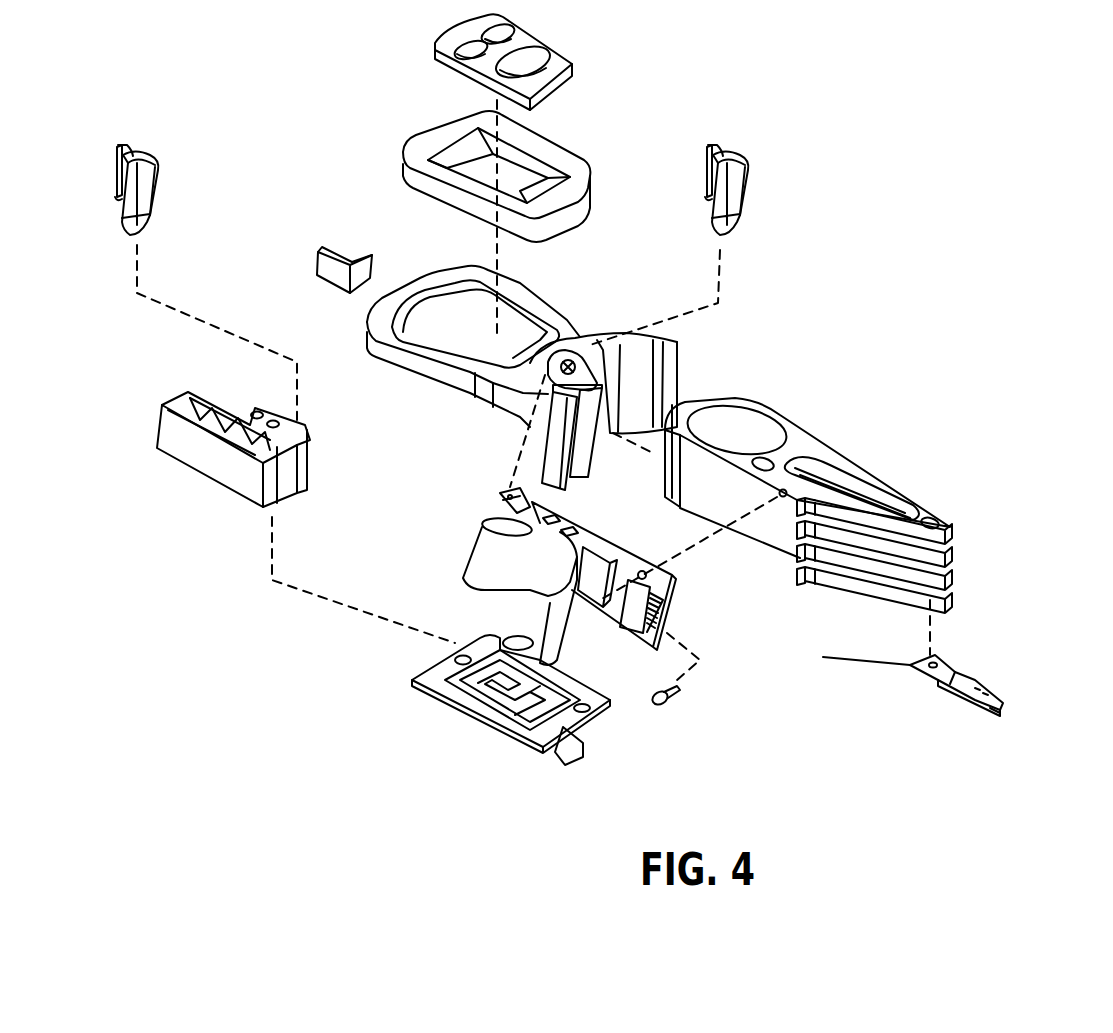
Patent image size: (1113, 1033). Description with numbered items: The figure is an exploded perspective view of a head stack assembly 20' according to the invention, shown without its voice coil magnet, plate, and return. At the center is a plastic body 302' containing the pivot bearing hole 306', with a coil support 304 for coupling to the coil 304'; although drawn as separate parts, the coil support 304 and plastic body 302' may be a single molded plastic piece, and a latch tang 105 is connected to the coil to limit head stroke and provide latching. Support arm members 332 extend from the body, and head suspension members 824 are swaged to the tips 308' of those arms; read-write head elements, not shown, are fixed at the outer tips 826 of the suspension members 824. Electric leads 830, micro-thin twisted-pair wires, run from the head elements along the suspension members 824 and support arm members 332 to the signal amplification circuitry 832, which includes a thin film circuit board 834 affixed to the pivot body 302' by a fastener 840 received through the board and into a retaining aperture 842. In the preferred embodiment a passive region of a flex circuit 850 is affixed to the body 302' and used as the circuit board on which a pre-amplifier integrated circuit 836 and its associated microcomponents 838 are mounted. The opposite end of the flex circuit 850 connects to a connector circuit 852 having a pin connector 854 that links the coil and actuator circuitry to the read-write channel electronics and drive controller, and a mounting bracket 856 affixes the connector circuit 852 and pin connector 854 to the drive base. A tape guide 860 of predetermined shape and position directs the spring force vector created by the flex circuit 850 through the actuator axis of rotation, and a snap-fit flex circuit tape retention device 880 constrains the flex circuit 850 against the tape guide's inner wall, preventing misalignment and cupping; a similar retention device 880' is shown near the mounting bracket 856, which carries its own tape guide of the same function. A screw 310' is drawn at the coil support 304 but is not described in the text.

The head stack assembly 20' is at (930, 217).
The latch tang 105 is at (313, 272).
The plastic body 302' is at (807, 478).
The coil support 304 is at (460, 346).
The coil 304' is at (519, 176).
The pivot bearing hole 306' is at (742, 411).
The tips of support arm members 308' is at (911, 554).
The screw 310' is at (587, 339).
The support arm members 332 is at (923, 507).
The head suspension members 824 is at (968, 683).
The outer tips 826 is at (1007, 707).
The electric leads 830 is at (853, 660).
The signal amplification circuitry 832 is at (692, 584).
The thin film circuit board 834 is at (640, 643).
The integrated circuit 836 is at (607, 560).
The microcomponents 838 is at (573, 533).
The fastener 840 is at (677, 690).
The retaining aperture 842 is at (778, 493).
The flex circuit 850 is at (523, 647).
The connector circuit 852 is at (600, 710).
The pin connector 854 is at (583, 743).
The mounting bracket 856 is at (223, 473).
The tape guide 860 is at (543, 480).
The flex circuit tape retention device 880 is at (765, 190).
The clip 880' is at (180, 190).